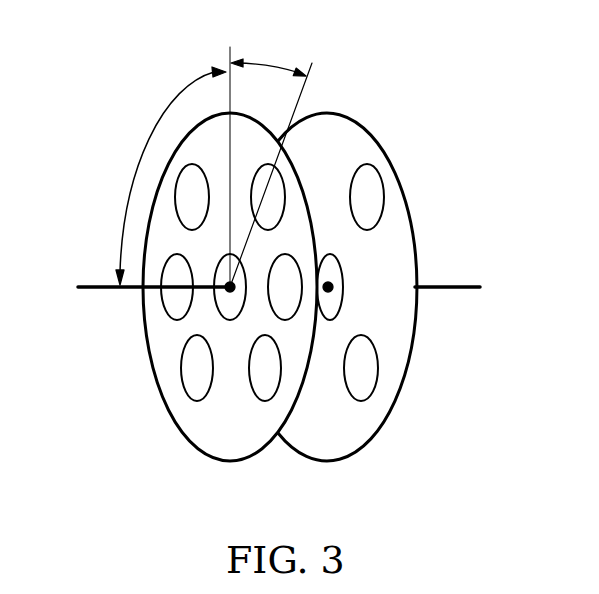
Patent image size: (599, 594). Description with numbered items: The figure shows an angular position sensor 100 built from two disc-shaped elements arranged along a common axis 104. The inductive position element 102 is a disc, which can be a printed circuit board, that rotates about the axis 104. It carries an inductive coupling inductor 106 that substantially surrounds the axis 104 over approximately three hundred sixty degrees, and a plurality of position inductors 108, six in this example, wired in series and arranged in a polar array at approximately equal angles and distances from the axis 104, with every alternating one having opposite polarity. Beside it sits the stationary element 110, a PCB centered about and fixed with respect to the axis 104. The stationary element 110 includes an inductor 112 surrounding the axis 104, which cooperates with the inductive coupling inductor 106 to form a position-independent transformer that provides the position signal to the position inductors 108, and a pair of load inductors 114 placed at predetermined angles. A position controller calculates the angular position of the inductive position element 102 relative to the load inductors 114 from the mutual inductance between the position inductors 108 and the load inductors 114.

The angular position sensor 100 is at (280, 277).
The inductive position element 102 is at (230, 462).
The axis 104 is at (100, 282).
The inductive coupling inductor 106 is at (217, 307).
The position inductors 108 is at (173, 190).
The stationary element 110 is at (327, 462).
The inductor 112 is at (343, 296).
The load inductors 114 is at (384, 197).